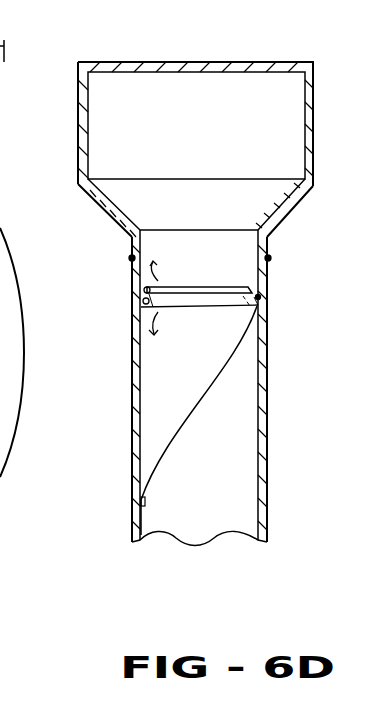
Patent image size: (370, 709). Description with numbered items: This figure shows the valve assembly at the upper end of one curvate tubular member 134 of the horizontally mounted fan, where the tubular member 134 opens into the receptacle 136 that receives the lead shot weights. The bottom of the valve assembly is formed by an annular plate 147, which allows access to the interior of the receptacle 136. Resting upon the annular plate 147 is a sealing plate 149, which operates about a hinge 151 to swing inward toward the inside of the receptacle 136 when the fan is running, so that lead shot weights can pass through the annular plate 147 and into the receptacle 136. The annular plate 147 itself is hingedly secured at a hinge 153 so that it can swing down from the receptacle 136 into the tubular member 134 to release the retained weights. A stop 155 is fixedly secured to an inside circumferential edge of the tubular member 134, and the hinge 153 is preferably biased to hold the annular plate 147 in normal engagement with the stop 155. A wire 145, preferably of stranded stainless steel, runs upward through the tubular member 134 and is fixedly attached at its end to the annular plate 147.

The curvate tubular member 134 is at (265, 402).
The receptacle 136 is at (78, 98).
The wire 145 is at (175, 420).
The annular plate 147 is at (180, 307).
The sealing plate 149 is at (206, 287).
The hinge 151 is at (144, 290).
The hinge 153 is at (144, 303).
The stop 155 is at (261, 297).